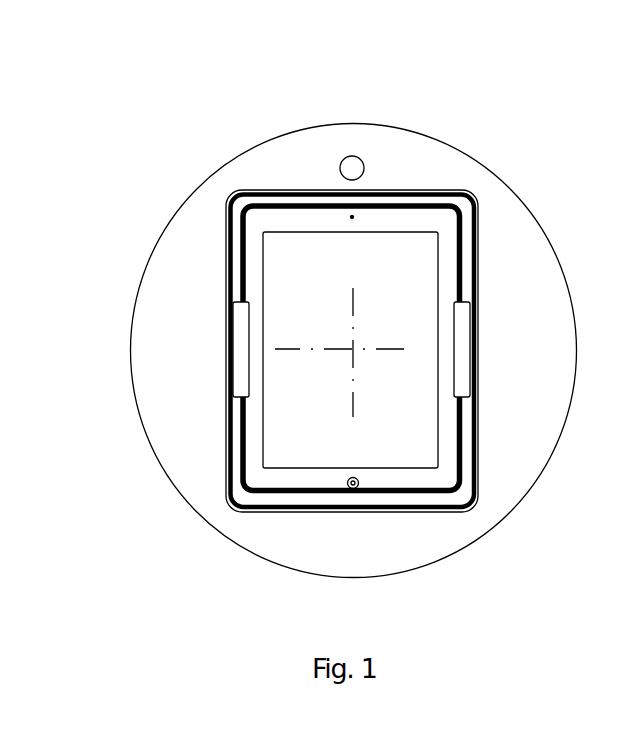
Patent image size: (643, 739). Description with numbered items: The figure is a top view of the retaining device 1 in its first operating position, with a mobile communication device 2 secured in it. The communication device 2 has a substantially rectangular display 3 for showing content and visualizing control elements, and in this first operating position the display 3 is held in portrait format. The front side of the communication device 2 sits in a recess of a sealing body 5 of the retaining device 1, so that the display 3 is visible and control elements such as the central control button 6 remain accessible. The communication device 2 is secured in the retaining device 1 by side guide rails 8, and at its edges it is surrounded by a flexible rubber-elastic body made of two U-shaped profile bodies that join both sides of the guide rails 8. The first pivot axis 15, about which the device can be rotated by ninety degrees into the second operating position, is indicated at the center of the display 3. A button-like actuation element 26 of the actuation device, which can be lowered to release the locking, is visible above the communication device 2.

The retaining device 1 is at (165, 120).
The mobile communication device 2 is at (438, 223).
The display 3 is at (413, 418).
The sealing body 5 is at (177, 467).
The central control button 6 is at (360, 485).
The side guide rails 8 is at (236, 342).
The first pivot axis 15 is at (345, 355).
The actuation element 26 is at (353, 164).